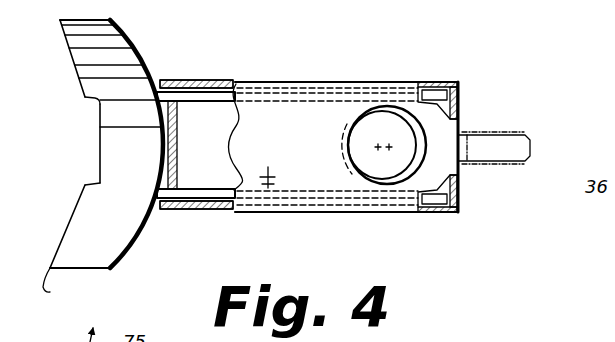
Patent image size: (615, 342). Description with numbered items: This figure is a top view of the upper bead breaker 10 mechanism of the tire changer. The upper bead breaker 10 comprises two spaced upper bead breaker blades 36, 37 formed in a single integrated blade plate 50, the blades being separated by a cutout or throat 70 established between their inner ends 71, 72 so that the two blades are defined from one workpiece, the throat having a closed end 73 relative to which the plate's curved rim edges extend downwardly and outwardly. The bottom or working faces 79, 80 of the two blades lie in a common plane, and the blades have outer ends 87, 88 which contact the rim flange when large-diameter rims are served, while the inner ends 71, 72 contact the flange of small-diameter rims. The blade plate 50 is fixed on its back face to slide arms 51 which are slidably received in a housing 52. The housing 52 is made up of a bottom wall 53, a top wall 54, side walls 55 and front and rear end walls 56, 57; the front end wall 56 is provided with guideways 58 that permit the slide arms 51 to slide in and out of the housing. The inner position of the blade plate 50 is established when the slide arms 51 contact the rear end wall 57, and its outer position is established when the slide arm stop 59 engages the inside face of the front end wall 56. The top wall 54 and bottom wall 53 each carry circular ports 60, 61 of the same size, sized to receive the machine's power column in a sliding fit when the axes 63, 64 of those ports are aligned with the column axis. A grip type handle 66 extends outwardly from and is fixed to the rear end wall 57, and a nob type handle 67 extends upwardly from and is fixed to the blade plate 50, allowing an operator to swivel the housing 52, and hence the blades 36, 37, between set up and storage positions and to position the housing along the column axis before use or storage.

The upper bead breaker 10 is at (310, 42).
The upper bead breaker blade 36 is at (92, 55).
The upper bead breaker blade 37 is at (91, 246).
The blade plate 50 is at (141, 98).
The slide arms 51 is at (200, 192).
The housing 52 is at (321, 81).
The bottom wall 53 is at (221, 175).
The top wall 54 is at (290, 172).
The side walls 55 is at (202, 81).
The front end wall 56 is at (167, 135).
The rear end wall 57 is at (461, 182).
The guideways 58 is at (180, 112).
The slide arm stop 59 is at (270, 167).
The circular port 60 is at (343, 155).
The circular port 61 is at (342, 145).
The axis 63 is at (389, 138).
The axis 64 is at (378, 150).
The grip type handle 66 is at (503, 132).
The nob type handle 67 is at (150, 341).
The throat 70 is at (92, 164).
The inner end 71 is at (84, 100).
The inner end 72 is at (85, 185).
The closed end 73 is at (107, 163).
The working face 79 is at (77, 69).
The working face 80 is at (71, 236).
The outer end 87 is at (61, 21).
The outer end 88 is at (56, 290).